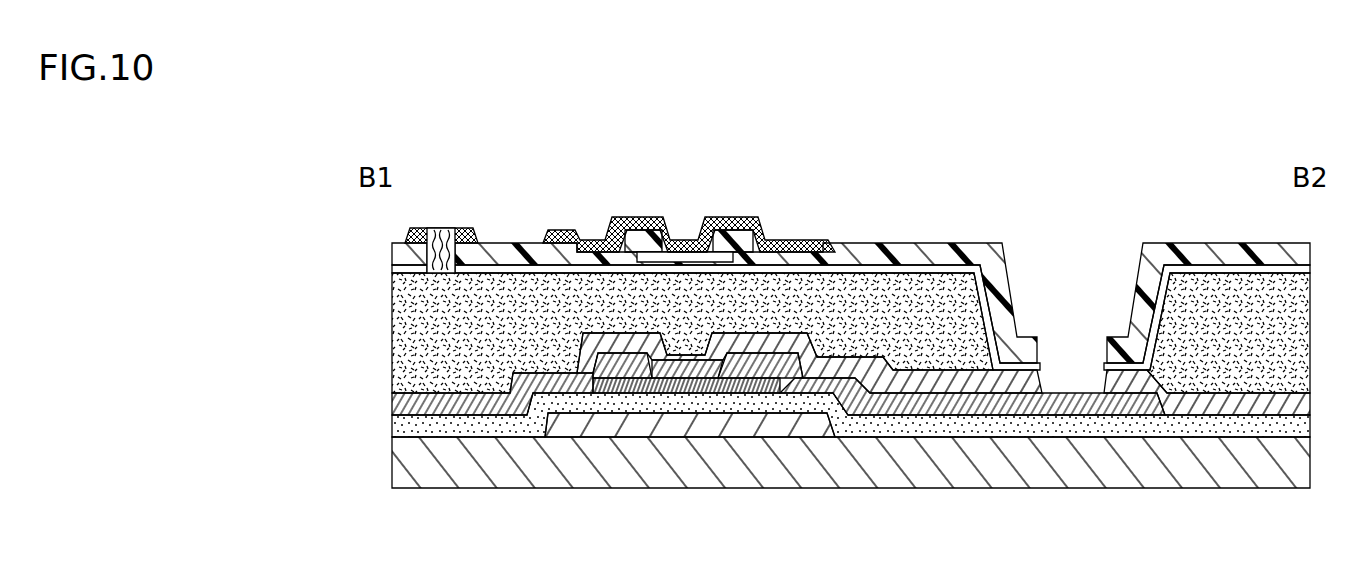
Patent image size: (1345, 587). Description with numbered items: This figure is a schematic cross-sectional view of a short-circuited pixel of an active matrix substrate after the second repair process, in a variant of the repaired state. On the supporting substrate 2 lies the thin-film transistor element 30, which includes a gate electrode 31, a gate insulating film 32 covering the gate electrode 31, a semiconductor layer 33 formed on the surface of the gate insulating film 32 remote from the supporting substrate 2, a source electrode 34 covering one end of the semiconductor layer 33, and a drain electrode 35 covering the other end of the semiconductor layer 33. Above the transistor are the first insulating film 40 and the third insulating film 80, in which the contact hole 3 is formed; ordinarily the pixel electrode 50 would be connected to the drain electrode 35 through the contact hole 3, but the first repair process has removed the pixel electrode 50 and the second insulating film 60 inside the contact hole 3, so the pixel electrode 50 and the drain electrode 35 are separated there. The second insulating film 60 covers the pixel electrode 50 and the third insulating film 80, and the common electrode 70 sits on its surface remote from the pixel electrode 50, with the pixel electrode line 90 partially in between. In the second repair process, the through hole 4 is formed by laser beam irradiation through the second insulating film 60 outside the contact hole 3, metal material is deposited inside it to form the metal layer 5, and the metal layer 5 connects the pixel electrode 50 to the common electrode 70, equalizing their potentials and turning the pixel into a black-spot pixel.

The supporting substrate 2 is at (502, 472).
The contact hole 3 is at (1072, 265).
The through hole 4 is at (447, 232).
The metal layer 5 is at (440, 228).
The thin-film transistor element 30 is at (313, 364).
The gate electrode 31 is at (548, 424).
The gate insulating film 32 is at (535, 405).
The semiconductor layer 33 is at (590, 388).
The source electrode 34 is at (545, 372).
The drain electrode 35 is at (600, 362).
The first insulating film 40 is at (580, 334).
The pixel electrode 50 is at (392, 271).
The second insulating film 60 is at (392, 248).
The common electrode 70 is at (408, 236).
The third insulating film 80 is at (392, 315).
The pixel electrode line 90 is at (690, 258).